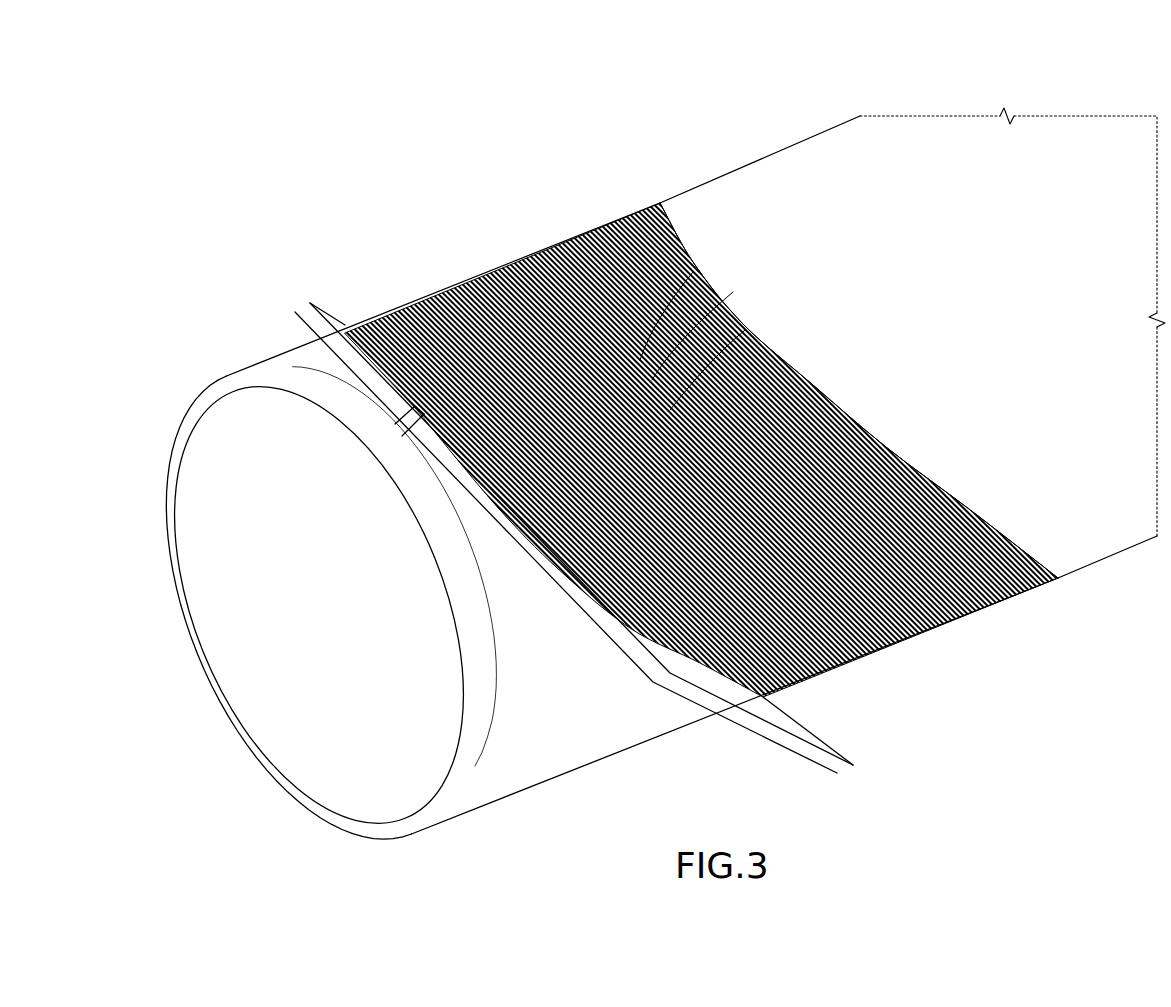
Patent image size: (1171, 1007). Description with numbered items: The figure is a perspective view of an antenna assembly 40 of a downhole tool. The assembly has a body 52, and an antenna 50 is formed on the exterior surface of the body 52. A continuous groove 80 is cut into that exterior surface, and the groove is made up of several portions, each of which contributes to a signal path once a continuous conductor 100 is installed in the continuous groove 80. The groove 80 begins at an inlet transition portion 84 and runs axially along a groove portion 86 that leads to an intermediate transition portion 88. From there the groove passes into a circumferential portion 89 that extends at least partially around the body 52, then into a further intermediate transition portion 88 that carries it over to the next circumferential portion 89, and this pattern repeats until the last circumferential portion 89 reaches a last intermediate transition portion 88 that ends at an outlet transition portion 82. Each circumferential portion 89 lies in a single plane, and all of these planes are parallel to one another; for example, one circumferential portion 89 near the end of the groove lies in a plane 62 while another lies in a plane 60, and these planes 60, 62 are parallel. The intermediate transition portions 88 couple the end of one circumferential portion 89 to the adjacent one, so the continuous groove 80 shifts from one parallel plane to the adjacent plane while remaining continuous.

The antenna assembly 40 is at (972, 88).
The antenna 50 is at (523, 198).
The body 52 is at (938, 225).
The plane 60 is at (295, 312).
The plane 62 is at (323, 307).
The continuous groove 80 is at (774, 344).
The continuous conductor 100 is at (745, 330).
The outlet transition portion 82 is at (398, 418).
The inlet transition portion 84 is at (403, 437).
The groove portion 86 is at (693, 272).
The intermediate transition portion 88 is at (733, 292).
The circumferential portion 89 is at (660, 214).